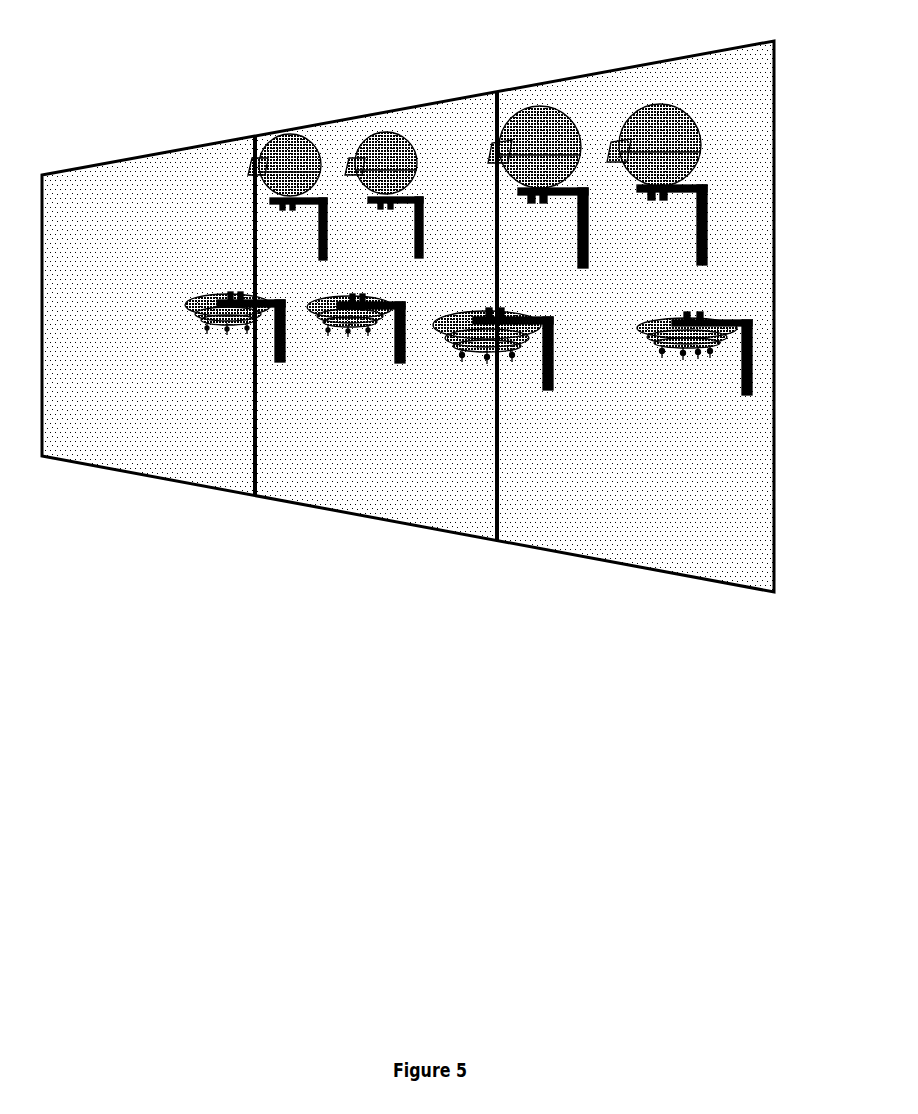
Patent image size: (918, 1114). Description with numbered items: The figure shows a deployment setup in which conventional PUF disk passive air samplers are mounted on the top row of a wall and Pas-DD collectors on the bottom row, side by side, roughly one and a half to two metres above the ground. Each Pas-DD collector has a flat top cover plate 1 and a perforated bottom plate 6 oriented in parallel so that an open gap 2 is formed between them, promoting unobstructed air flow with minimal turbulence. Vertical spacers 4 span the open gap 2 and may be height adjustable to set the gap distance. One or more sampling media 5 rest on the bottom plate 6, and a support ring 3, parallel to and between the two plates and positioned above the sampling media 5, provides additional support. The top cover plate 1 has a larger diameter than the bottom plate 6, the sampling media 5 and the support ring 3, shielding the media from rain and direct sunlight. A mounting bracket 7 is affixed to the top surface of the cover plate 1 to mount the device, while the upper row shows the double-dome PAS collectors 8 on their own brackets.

The top cover plate 1 is at (657, 322).
The open gap 2 is at (643, 343).
The support ring 3 is at (665, 352).
The vertical spacers 4 is at (683, 350).
The sampling media 5 is at (708, 346).
The perforated bottom plate 6 is at (698, 348).
The mounting bracket 7 is at (745, 318).
The spherical lamp 8 is at (653, 117).